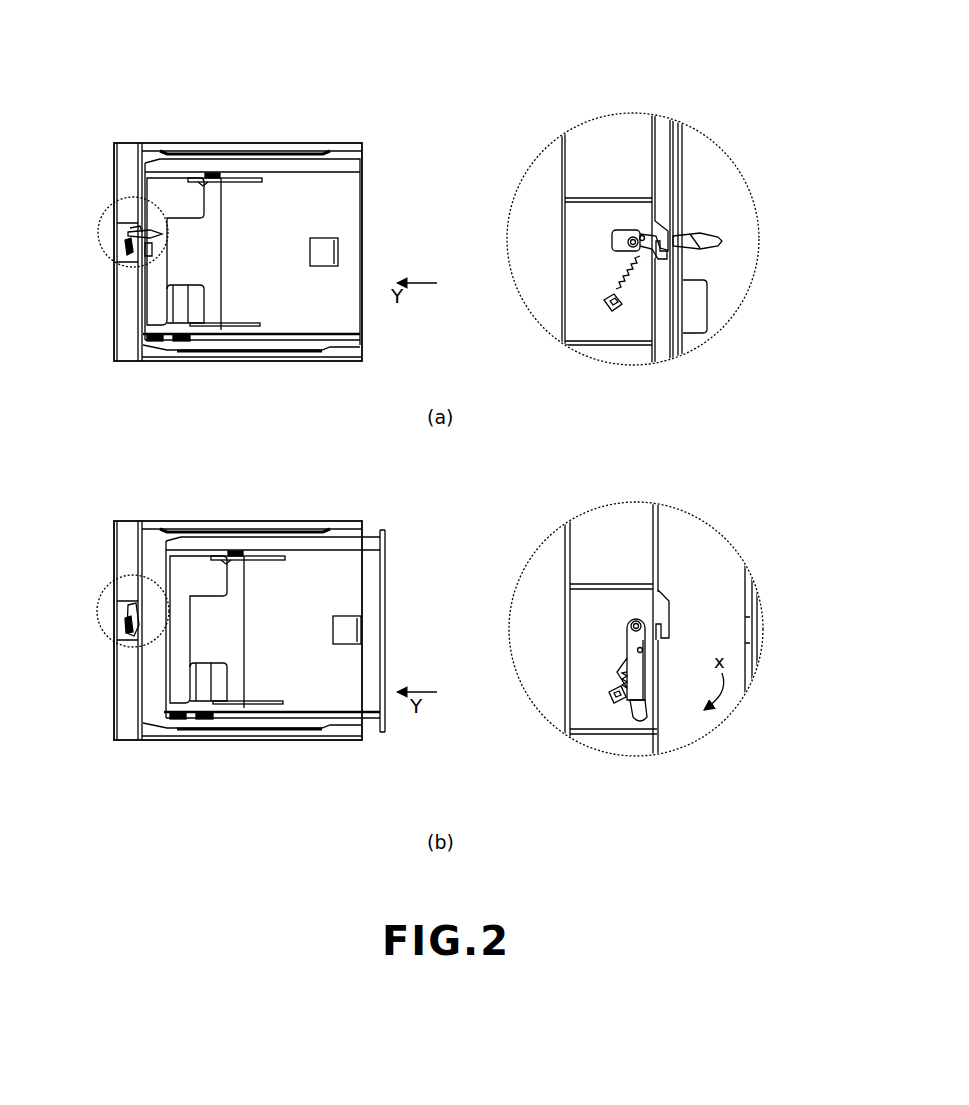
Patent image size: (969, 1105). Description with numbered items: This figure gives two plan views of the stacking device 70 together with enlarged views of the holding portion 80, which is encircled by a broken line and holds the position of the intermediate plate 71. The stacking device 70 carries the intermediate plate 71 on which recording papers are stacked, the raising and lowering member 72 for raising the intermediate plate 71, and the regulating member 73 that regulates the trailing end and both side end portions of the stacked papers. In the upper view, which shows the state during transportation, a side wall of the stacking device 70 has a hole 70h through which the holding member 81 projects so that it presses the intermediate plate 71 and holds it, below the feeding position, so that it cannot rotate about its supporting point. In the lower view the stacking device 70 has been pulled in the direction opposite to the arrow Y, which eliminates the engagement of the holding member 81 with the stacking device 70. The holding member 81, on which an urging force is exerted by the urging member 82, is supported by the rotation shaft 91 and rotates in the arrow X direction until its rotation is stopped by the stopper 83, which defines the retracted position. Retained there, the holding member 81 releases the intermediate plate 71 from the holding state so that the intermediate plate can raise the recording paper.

The stacking device 70 is at (372, 214).
The hole 70h is at (688, 248).
The intermediate plate 71 is at (211, 250).
The raising and lowering member 72 is at (182, 300).
The regulating member 73 is at (262, 323).
The holding portion 80 is at (98, 212).
The holding member 81 is at (160, 235).
The urging member 82 is at (622, 283).
The stopper 83 is at (616, 311).
The rotation shaft 91 is at (628, 243).